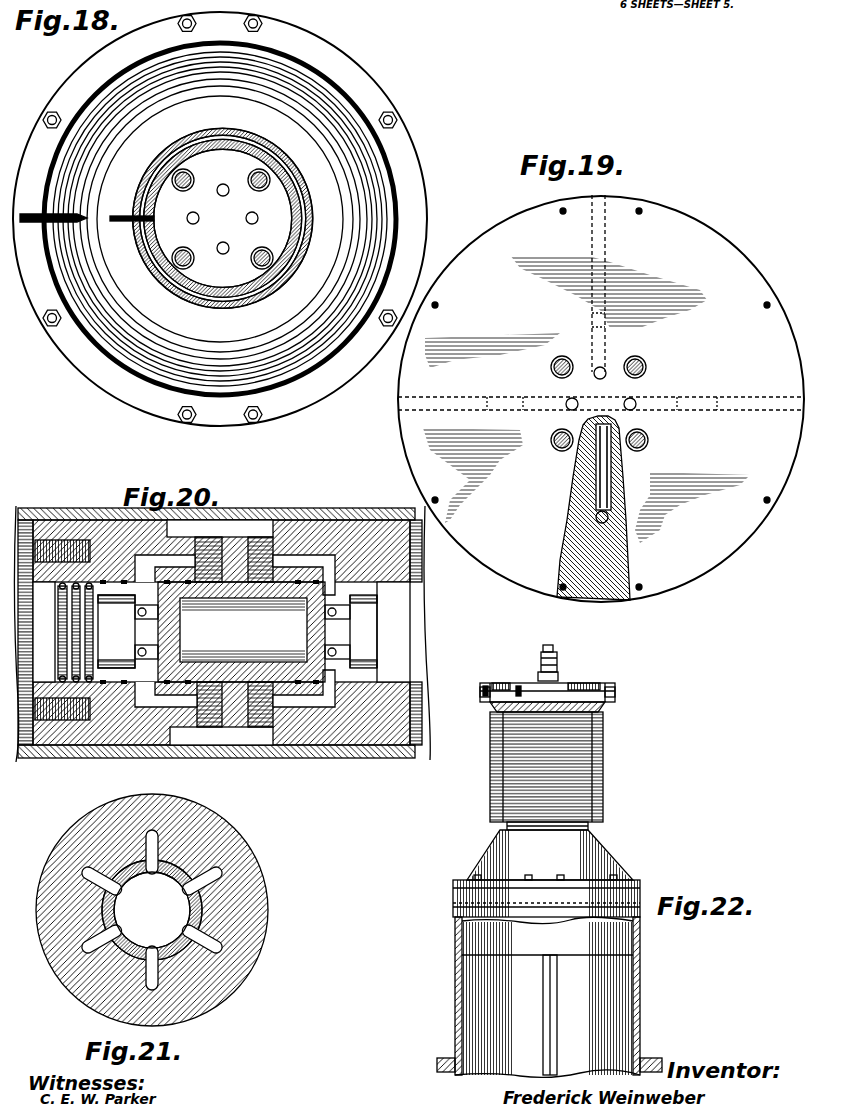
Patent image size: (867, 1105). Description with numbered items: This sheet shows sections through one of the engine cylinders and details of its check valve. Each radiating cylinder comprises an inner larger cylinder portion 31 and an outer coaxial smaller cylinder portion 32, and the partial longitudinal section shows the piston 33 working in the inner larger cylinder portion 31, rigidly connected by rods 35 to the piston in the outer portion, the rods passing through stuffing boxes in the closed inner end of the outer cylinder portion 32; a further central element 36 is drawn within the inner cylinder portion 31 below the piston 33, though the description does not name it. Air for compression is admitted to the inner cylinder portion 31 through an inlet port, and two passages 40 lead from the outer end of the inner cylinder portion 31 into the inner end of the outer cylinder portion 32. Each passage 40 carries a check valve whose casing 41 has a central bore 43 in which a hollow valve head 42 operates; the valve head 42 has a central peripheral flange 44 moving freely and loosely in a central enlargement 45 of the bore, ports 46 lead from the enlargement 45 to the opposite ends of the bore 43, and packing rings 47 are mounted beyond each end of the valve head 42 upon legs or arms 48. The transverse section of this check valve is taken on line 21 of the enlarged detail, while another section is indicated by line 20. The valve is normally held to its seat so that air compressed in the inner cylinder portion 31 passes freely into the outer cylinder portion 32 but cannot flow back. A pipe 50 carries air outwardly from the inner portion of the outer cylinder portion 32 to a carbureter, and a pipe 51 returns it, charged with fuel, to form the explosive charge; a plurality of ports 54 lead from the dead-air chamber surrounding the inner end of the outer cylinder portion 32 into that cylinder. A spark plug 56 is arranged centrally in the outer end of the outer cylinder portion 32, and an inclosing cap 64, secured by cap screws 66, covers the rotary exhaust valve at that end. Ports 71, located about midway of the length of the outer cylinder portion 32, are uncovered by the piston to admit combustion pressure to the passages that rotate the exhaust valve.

In FIG. 19, the section line 20 is at (739, 419).
In FIG. 20, the section line 21 is at (295, 500).
In FIG. 18, the inner larger cylinder portion 31 is at (425, 187).
In FIG. 22, the inner larger cylinder portion 31 is at (455, 938).
In FIG. 18, the outer coaxial smaller cylinder portion 32 is at (313, 199).
In FIG. 22, the outer coaxial smaller cylinder portion 32 is at (600, 822).
In FIG. 22, the piston 33 is at (547, 943).
In FIG. 18, the rods 35 is at (191, 177).
In FIG. 19, the rods 35 is at (551, 366).
In FIG. 22, the rod 36 is at (548, 1013).
In FIG. 18, the passages 40 is at (223, 242).
In FIG. 19, the passages 40 is at (616, 396).
In FIG. 20, the passages 40 is at (28, 542).
In FIG. 19, the check valve casing 41 is at (608, 498).
In FIG. 20, the check valve casing 41 is at (110, 533).
In FIG. 21, the check valve casing 41 is at (232, 842).
In FIG. 20, the hollow valve head 42 is at (241, 632).
In FIG. 20, the central bore 43 is at (221, 630).
In FIG. 20, the central peripheral flange 44 is at (237, 722).
In FIG. 20, the central enlargement 45 is at (263, 550).
In FIG. 20, the ports 46 is at (167, 560).
In FIG. 21, the ports 46 is at (100, 878).
In FIG. 20, the packing rings 47 is at (448, 657).
In FIG. 21, the packing rings 47 is at (190, 960).
In FIG. 20, the legs or arms 48 is at (242, 632).
In FIG. 21, the legs or arms 48 is at (130, 905).
In FIG. 18, the pipe 50 is at (57, 213).
In FIG. 22, the pipe 50 is at (451, 861).
In FIG. 18, the pipe 51 is at (121, 226).
In FIG. 22, the pipe 51 is at (482, 826).
In FIG. 18, the ports 54 is at (152, 182).
In FIG. 22, the spark plug 56 is at (558, 660).
In FIG. 22, the inclosing cap 64 is at (604, 686).
In FIG. 22, the cap screws 66 is at (518, 685).
In FIG. 18, the ports 71 is at (294, 218).